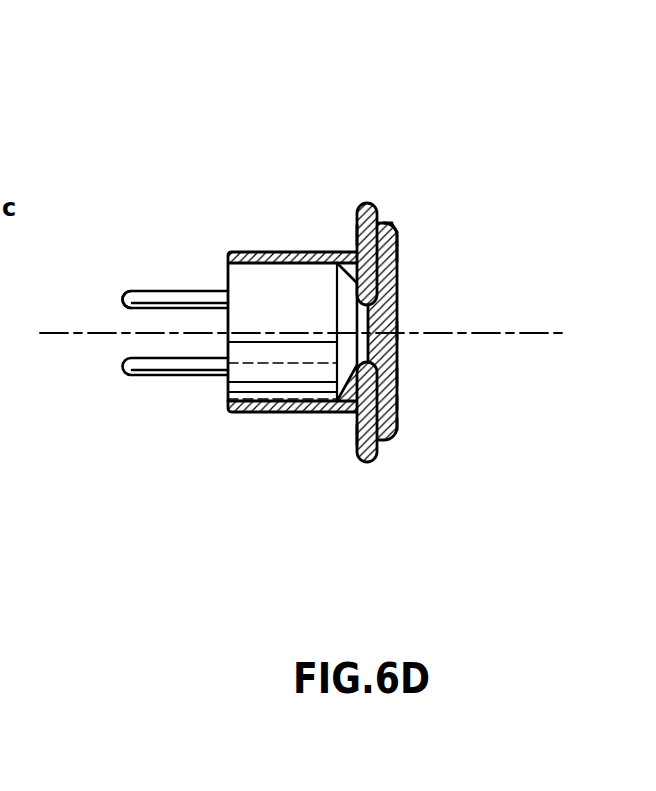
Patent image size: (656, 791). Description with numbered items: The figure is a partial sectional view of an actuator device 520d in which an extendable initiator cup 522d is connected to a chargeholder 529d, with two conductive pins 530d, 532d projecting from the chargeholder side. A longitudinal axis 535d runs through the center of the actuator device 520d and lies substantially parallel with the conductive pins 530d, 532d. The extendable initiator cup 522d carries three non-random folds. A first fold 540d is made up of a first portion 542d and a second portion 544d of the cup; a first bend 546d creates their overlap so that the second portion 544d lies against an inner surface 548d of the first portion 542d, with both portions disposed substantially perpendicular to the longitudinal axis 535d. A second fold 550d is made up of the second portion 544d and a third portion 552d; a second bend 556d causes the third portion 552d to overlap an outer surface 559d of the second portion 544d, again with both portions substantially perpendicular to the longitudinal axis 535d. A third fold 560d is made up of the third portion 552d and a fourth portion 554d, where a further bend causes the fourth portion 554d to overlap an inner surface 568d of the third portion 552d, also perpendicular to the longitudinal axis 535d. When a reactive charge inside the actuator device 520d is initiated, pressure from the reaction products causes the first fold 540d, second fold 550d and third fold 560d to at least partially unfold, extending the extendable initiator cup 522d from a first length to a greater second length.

The actuator device 520d is at (146, 205).
The extendable initiator cup 522d is at (248, 253).
The chargeholder 529d is at (227, 277).
The conductive pin 530d is at (122, 367).
The conductive pin 532d is at (125, 298).
The longitudinal axis 535d is at (549, 333).
The first fold 540d is at (340, 193).
The first portion 542d is at (354, 232).
The second portion 544d is at (384, 221).
The first bend 546d is at (363, 203).
The inner surface 548d is at (393, 221).
The second fold 550d is at (364, 313).
The third portion 552d is at (397, 232).
The fourth portion 554d is at (397, 425).
The second bend 556d is at (397, 330).
The outer surface 559d is at (397, 256).
The third fold 560d is at (412, 208).
The inner surface 568d is at (397, 403).